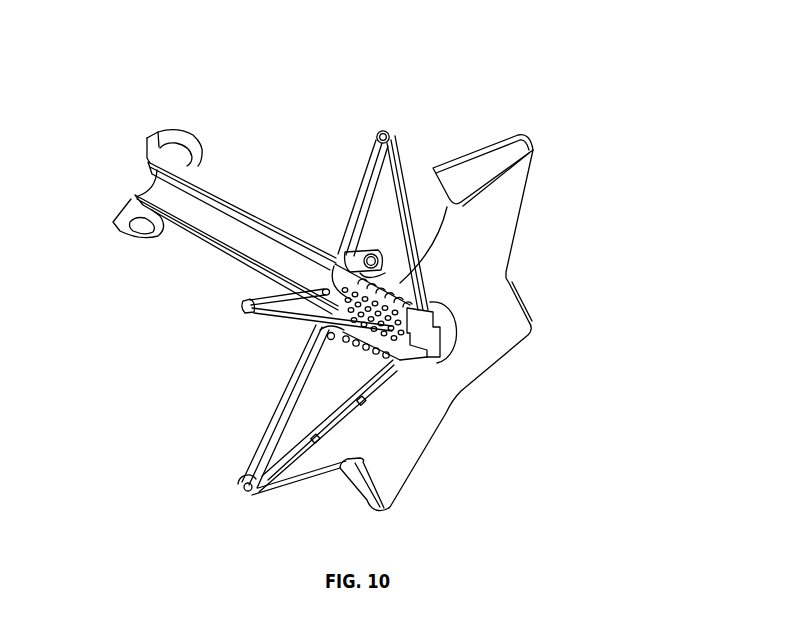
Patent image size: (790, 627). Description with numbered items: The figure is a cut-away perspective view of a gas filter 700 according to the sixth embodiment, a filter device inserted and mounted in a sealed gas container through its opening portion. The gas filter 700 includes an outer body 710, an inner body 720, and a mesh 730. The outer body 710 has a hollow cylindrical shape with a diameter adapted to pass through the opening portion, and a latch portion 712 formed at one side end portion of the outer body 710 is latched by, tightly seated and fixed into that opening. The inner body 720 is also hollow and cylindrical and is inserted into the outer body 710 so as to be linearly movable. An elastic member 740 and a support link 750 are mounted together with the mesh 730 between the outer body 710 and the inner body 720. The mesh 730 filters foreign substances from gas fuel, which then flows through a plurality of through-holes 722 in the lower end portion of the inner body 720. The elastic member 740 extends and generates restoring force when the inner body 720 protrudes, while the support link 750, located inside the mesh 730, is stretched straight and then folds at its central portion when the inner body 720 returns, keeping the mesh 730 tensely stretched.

The gas filter 700 is at (256, 59).
The outer body 710 is at (240, 193).
The latch portion 712 is at (148, 143).
The inner body 720 is at (200, 237).
The through-holes 722 is at (334, 257).
The mesh 730 is at (508, 208).
The elastic member 740 is at (453, 193).
The support link 750 is at (283, 315).